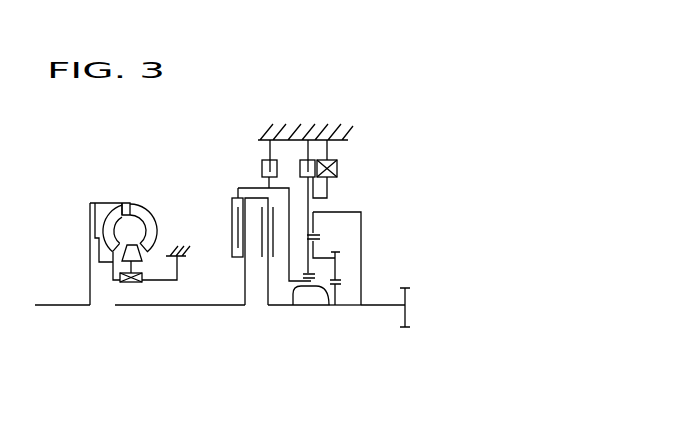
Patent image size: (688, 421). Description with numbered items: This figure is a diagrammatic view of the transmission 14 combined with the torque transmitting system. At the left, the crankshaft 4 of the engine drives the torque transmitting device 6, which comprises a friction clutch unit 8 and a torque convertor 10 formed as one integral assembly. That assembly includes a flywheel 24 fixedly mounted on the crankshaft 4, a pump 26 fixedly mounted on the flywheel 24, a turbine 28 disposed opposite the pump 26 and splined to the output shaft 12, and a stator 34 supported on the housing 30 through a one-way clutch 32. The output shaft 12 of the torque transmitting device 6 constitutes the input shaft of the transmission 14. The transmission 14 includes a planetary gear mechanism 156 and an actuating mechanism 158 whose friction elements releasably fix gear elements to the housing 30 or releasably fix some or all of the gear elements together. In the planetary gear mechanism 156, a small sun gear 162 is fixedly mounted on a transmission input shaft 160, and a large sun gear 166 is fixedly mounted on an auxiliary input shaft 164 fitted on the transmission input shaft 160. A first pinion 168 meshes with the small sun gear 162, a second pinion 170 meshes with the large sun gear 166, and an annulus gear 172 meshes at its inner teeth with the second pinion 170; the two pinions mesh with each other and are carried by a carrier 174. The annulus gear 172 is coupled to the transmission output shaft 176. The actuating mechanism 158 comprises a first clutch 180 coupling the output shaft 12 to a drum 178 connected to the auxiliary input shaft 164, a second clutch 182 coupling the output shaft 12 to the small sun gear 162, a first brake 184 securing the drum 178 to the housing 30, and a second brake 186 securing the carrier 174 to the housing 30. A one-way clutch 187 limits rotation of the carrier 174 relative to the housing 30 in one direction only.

The crankshaft 4 is at (64, 308).
The torque transmitting device 6 is at (127, 185).
The friction clutch unit 8 is at (100, 217).
The torque convertor 10 is at (141, 197).
The output shaft 12 is at (204, 308).
The transmission 14 is at (350, 345).
The flywheel 24 is at (88, 258).
The pump 26 is at (148, 220).
The turbine 28 is at (123, 212).
The housing 30 is at (182, 250).
The one-way clutch 32 is at (136, 283).
The stator 34 is at (106, 256).
The planetary gear mechanism 156 is at (369, 204).
The actuating mechanism 158 is at (269, 313).
The transmission input shaft 160 is at (314, 306).
The small sun gear 162 is at (362, 320).
The auxiliary input shaft 164 is at (299, 306).
The large sun gear 166 is at (339, 289).
The first pinion 168 is at (341, 281).
The second pinion 170 is at (318, 247).
The annulus gear 172 is at (315, 228).
The carrier 174 is at (305, 206).
The transmission output shaft 176 is at (404, 329).
The drum 178 is at (240, 187).
The first clutch 180 is at (232, 214).
The second clutch 182 is at (268, 306).
The first brake 184 is at (267, 140).
The second brake 186 is at (311, 140).
The one-way clutch 187 is at (337, 164).